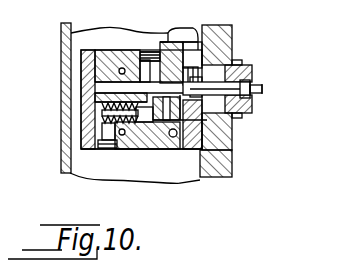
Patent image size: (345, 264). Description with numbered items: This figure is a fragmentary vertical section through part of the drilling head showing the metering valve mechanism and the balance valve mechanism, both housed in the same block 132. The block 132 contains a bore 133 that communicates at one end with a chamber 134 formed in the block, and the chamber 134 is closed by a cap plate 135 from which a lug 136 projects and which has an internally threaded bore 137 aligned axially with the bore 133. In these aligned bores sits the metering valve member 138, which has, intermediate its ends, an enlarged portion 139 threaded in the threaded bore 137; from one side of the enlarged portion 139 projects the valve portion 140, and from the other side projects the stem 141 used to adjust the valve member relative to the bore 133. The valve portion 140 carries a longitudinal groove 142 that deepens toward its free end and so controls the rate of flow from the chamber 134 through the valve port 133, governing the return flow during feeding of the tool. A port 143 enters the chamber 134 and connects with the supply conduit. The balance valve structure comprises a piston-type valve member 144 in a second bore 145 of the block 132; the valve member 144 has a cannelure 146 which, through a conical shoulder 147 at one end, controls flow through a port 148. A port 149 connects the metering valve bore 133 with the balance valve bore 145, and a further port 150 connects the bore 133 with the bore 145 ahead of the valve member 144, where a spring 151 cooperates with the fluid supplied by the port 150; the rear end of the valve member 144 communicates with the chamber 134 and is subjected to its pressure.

The block 132 is at (118, 50).
The bore 133 is at (100, 88).
The chamber 134 is at (179, 39).
The cap plate 135 is at (232, 45).
The lug 136 is at (234, 62).
The internally threaded bore 137 is at (240, 67).
The metering valve member 138 is at (250, 84).
The enlarged portion 139 is at (233, 113).
The valve portion 140 is at (172, 44).
The stem 141 is at (263, 95).
The groove 142 is at (177, 140).
The port 143 is at (230, 139).
The valve member 144 is at (166, 122).
The second bore 145 is at (138, 150).
The cannelure 146 is at (118, 126).
The conical shoulder 147 is at (143, 97).
The port 148 is at (173, 32).
The port 149 is at (148, 106).
The port 150 is at (96, 100).
The spring 151 is at (103, 150).